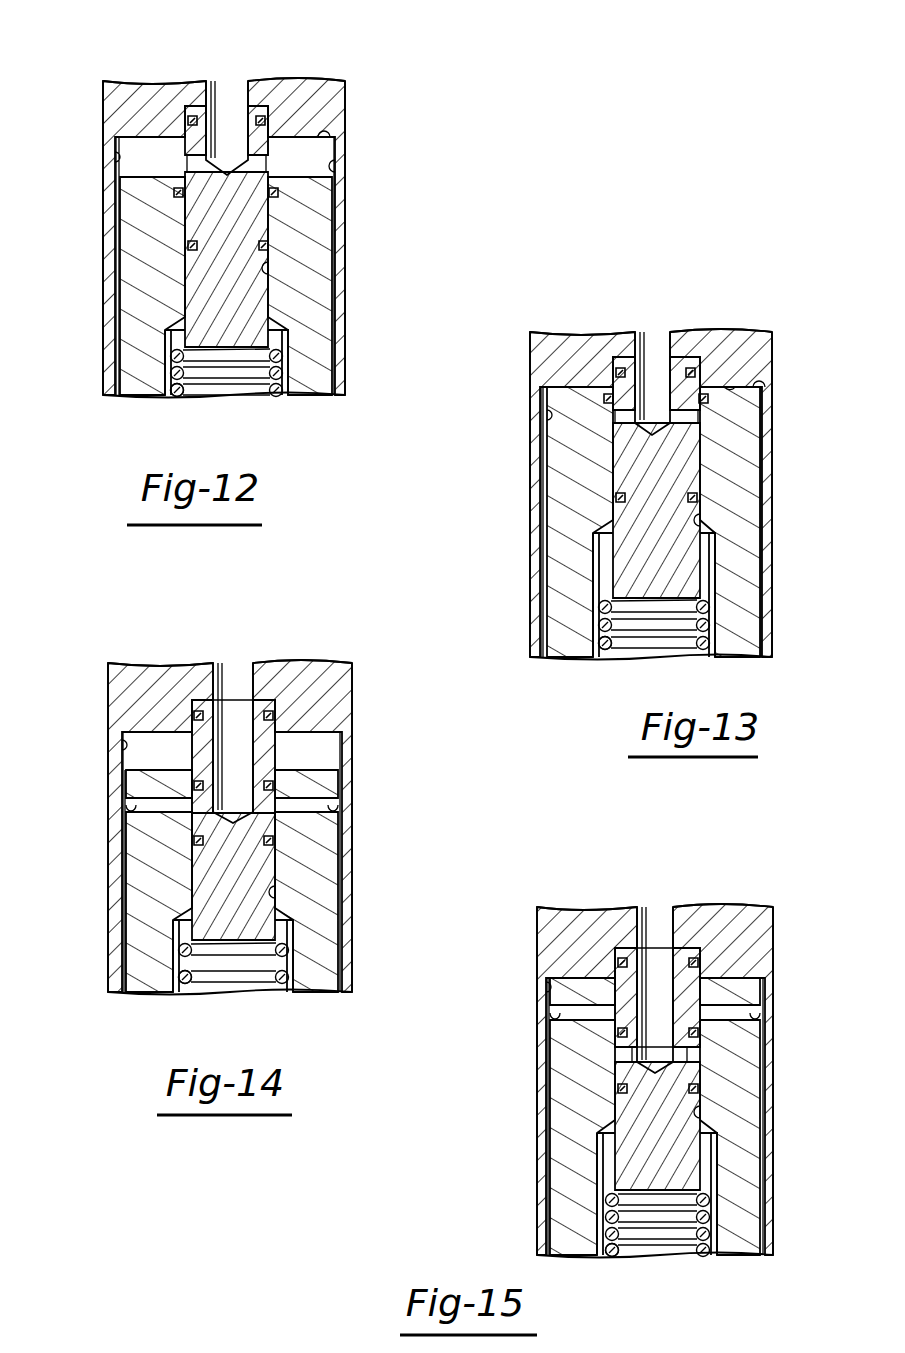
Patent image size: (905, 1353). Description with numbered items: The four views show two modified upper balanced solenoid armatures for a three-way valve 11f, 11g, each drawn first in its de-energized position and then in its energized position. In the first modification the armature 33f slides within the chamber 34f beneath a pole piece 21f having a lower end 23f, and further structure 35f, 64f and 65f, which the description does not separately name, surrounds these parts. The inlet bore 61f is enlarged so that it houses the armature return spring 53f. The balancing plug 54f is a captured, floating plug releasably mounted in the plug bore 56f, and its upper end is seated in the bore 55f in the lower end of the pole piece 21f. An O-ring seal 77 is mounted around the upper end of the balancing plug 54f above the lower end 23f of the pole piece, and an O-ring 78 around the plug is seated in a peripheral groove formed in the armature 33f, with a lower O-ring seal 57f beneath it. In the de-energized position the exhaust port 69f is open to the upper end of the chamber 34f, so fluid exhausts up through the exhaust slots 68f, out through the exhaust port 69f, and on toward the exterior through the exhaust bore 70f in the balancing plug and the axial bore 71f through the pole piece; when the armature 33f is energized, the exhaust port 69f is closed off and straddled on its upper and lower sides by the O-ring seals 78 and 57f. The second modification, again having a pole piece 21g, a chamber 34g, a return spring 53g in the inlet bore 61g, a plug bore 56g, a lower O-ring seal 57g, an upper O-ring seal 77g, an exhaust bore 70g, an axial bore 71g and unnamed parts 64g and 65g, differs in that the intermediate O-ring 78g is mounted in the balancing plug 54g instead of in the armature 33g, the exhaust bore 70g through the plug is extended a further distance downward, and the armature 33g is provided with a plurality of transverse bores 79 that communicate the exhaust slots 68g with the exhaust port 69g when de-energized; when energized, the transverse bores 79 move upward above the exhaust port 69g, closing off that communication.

In FIG. 12, the fuel injection pump assembly 11f is at (94, 246).
In FIG. 13, the fuel injection pump assembly 11f is at (521, 504).
In FIG. 12, the pole piece 21f is at (310, 108).
In FIG. 13, the pole piece 21f is at (548, 362).
In FIG. 12, the lower end of pole piece 23f is at (322, 140).
In FIG. 13, the lower end of pole piece 23f is at (760, 385).
In FIG. 12, the armature 33f is at (318, 250).
In FIG. 13, the armature 33f is at (740, 520).
In FIG. 12, the chamber 34f is at (117, 157).
In FIG. 13, the chamber 34f is at (545, 420).
In FIG. 12, the housing shoulder 35f is at (337, 166).
In FIG. 13, the housing shoulder 35f is at (730, 387).
In FIG. 12, the armature return spring 53f is at (177, 395).
In FIG. 13, the armature return spring 53f is at (605, 650).
In FIG. 12, the balancing plug 54f is at (190, 280).
In FIG. 13, the balancing plug 54f is at (616, 530).
In FIG. 12, the bore 55f is at (270, 138).
In FIG. 13, the bore 55f is at (690, 380).
In FIG. 12, the plug bore 56f is at (265, 272).
In FIG. 13, the plug bore 56f is at (697, 520).
In FIG. 12, the O-ring seal 57f is at (266, 245).
In FIG. 13, the O-ring seal 57f is at (697, 497).
In FIG. 12, the inlet bore 61f is at (275, 383).
In FIG. 13, the inlet bore 61f is at (700, 648).
In FIG. 12, the insert 64f is at (250, 108).
In FIG. 13, the insert 64f is at (615, 357).
In FIG. 12, the spring cup 65f is at (285, 358).
In FIG. 13, the spring cup 65f is at (712, 590).
In FIG. 12, the exhaust slots 68f is at (338, 322).
In FIG. 13, the exhaust slots 68f is at (765, 580).
In FIG. 12, the exhaust port 69f is at (183, 190).
In FIG. 13, the exhaust port 69f is at (612, 440).
In FIG. 12, the exhaust bore 70f is at (214, 100).
In FIG. 13, the exhaust bore 70f is at (641, 360).
In FIG. 12, the axial bore 71f is at (230, 86).
In FIG. 13, the axial bore 71f is at (660, 340).
In FIG. 12, the O-ring seal 77 is at (190, 120).
In FIG. 13, the O-ring seal 77 is at (618, 372).
In FIG. 12, the O-ring 78 is at (277, 192).
In FIG. 13, the O-ring 78 is at (708, 398).
In FIG. 14, the fuel injection pump assembly 11g is at (103, 762).
In FIG. 15, the fuel injection pump assembly 11g is at (533, 1009).
In FIG. 14, the pole piece 21g is at (325, 678).
In FIG. 15, the pole piece 21g is at (750, 935).
In FIG. 14, the armature 33g is at (320, 850).
In FIG. 15, the armature 33g is at (745, 1130).
In FIG. 14, the chamber 34g is at (124, 745).
In FIG. 15, the chamber 34g is at (553, 985).
In FIG. 14, the armature return spring 53g is at (185, 985).
In FIG. 15, the armature return spring 53g is at (613, 1258).
In FIG. 14, the balancing plug 54g is at (262, 735).
In FIG. 15, the balancing plug 54g is at (625, 1138).
In FIG. 14, the plug bore 56g is at (272, 892).
In FIG. 15, the plug bore 56g is at (700, 1112).
In FIG. 14, the O-ring seal 57g is at (272, 840).
In FIG. 15, the O-ring seal 57g is at (697, 1088).
In FIG. 14, the inlet bore 61g is at (280, 972).
In FIG. 15, the inlet bore 61g is at (695, 1245).
In FIG. 14, the insert 64g is at (192, 700).
In FIG. 15, the insert 64g is at (616, 948).
In FIG. 14, the spring cup 65g is at (285, 930).
In FIG. 15, the spring cup 65g is at (710, 1180).
In FIG. 14, the exhaust slots 68g is at (340, 920).
In FIG. 15, the exhaust slots 68g is at (765, 1180).
In FIG. 14, the exhaust port 69g is at (193, 820).
In FIG. 15, the exhaust port 69g is at (618, 1070).
In FIG. 14, the exhaust bore 70g is at (217, 700).
In FIG. 15, the exhaust bore 70g is at (640, 960).
In FIG. 14, the axial bore 71g is at (240, 680).
In FIG. 15, the axial bore 71g is at (670, 905).
In FIG. 14, the O-ring seal 77g is at (272, 715).
In FIG. 15, the O-ring seal 77g is at (698, 960).
In FIG. 14, the intermediate O-ring 78g is at (272, 785).
In FIG. 15, the intermediate O-ring 78g is at (698, 1032).
In FIG. 14, the transverse bores 79 is at (338, 805).
In FIG. 15, the transverse bores 79 is at (760, 1013).